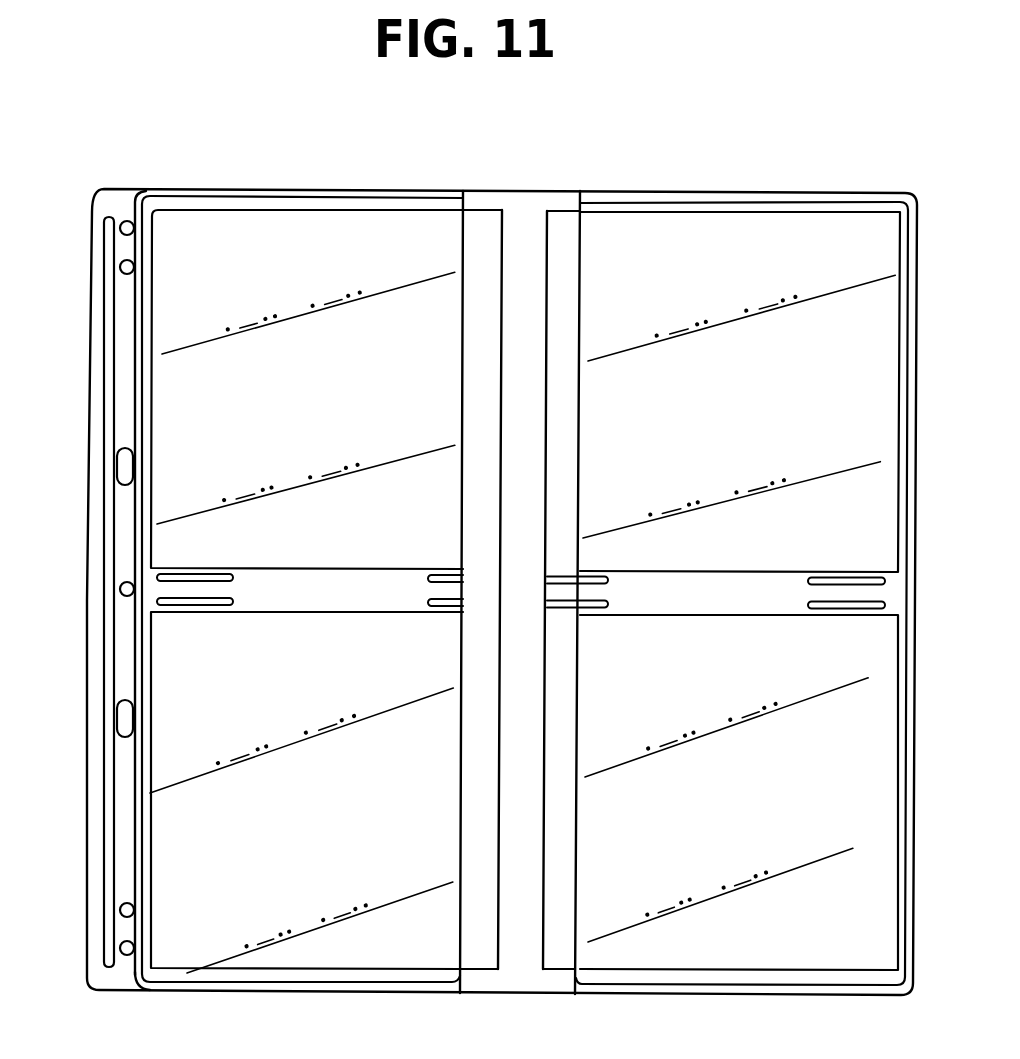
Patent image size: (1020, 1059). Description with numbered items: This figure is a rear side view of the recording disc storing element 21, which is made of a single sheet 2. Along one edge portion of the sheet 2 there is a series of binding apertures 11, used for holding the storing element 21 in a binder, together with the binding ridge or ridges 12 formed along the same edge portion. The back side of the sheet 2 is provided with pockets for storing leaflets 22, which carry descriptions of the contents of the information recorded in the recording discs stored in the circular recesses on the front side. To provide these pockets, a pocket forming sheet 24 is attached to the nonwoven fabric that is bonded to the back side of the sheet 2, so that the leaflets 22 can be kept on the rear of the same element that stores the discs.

The recording disc storing element 21 is at (228, 166).
The sheet 2 is at (317, 190).
The leaflets 22 is at (492, 228).
The pocket forming sheet 24 is at (466, 222).
The apertures 11 is at (129, 268).
The binding ridges 12 is at (107, 643).